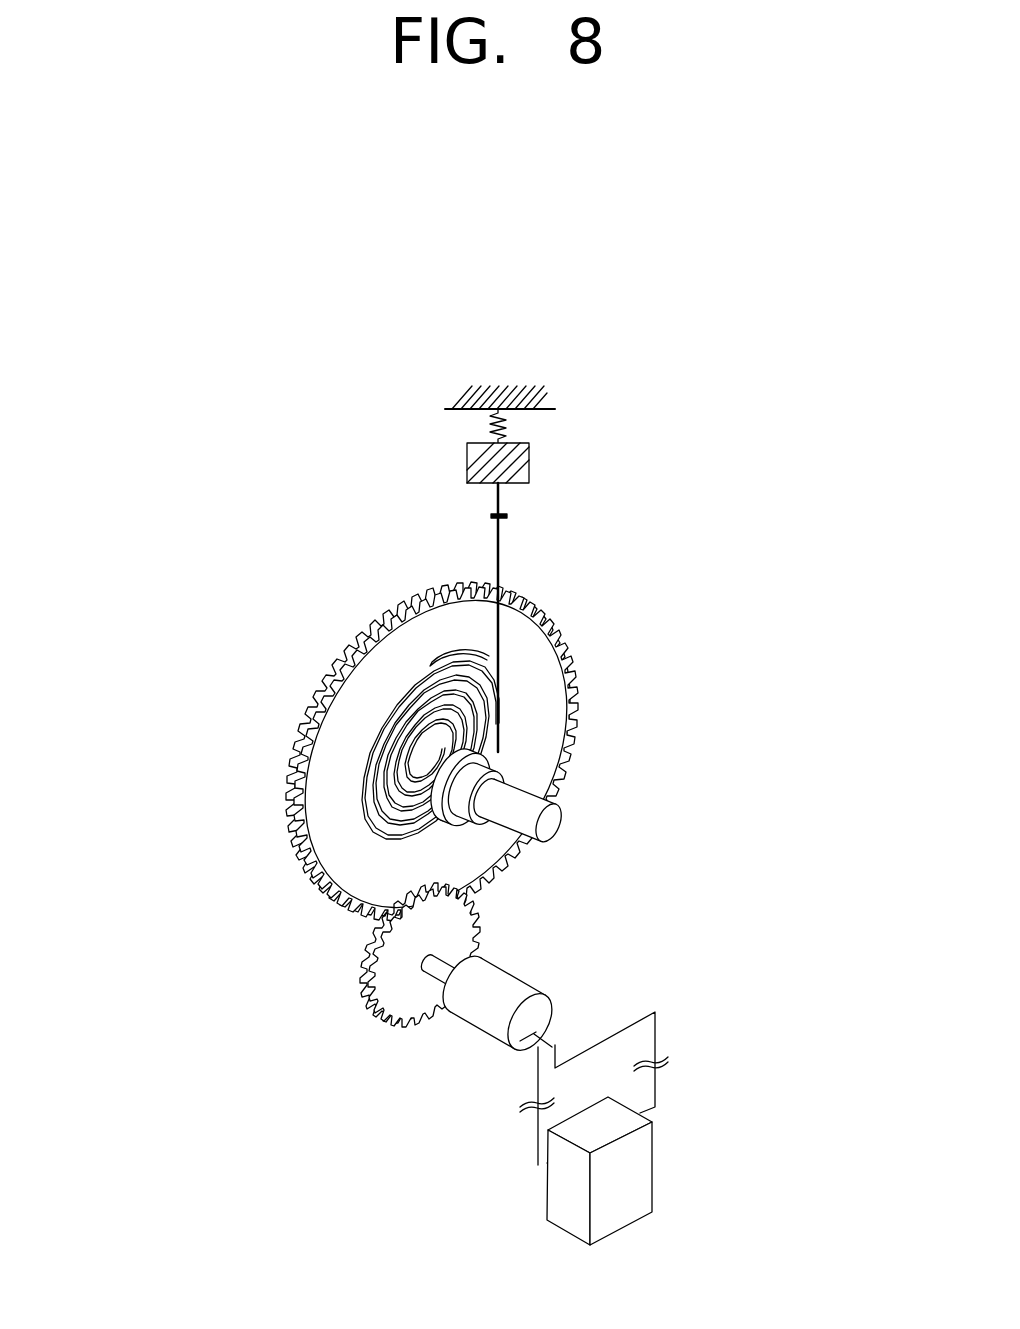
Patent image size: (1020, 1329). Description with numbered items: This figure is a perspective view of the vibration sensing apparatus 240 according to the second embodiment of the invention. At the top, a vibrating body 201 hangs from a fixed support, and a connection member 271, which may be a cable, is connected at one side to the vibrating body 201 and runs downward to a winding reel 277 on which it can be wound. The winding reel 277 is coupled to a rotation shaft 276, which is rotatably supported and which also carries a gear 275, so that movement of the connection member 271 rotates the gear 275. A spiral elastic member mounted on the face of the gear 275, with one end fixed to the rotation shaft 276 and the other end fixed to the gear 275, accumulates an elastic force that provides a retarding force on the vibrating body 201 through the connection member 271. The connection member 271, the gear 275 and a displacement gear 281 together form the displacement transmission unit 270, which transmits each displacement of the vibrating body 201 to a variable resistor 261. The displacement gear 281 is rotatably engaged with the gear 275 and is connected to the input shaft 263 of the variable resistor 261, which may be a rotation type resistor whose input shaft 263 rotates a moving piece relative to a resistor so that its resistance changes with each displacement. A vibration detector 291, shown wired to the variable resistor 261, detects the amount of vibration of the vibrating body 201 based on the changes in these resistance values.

The vibrating body 201 is at (529, 462).
The vibration sensing apparatus 240 is at (700, 627).
The displacement transmission unit 270 is at (117, 660).
The connection member 271 is at (496, 543).
The gear 275 is at (289, 762).
The displacement gear 281 is at (366, 965).
The winding reel 277 is at (505, 765).
The rotation shaft 276 is at (550, 818).
The input shaft 263 is at (430, 990).
The variable resistor 261 is at (485, 1025).
The vibration detector 291 is at (638, 1183).